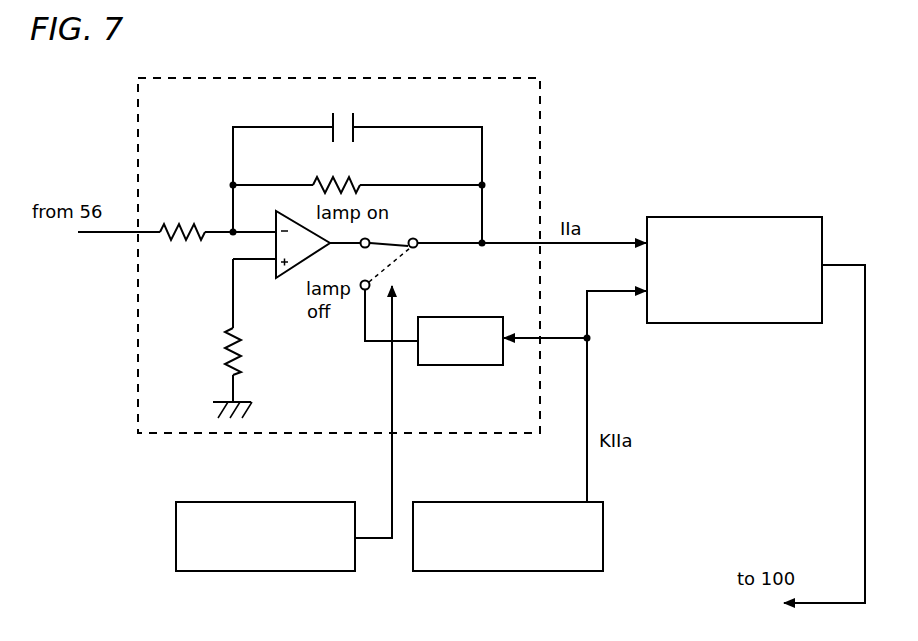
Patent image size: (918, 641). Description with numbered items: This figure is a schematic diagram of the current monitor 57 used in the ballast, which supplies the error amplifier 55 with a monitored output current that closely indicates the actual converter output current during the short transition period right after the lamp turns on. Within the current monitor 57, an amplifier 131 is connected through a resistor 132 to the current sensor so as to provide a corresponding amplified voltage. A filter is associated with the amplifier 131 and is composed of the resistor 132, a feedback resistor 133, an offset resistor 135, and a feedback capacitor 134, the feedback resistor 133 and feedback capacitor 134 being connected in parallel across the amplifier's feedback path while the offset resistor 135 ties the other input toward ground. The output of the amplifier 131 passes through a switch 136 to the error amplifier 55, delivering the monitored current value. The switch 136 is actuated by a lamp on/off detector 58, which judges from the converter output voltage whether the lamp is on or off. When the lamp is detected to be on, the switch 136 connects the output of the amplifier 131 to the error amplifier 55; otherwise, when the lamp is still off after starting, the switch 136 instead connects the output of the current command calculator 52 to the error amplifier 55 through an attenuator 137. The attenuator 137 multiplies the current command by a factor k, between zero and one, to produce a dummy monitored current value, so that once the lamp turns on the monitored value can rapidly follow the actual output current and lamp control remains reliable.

The current monitor 57 is at (533, 78).
The feedback capacitor 134 is at (343, 113).
The feedback resistor 133 is at (343, 176).
The resistor 132 is at (190, 244).
The amplifier 131 is at (283, 280).
The offset resistor 135 is at (199, 361).
The switch 136 is at (400, 274).
The attenuator 137 is at (482, 366).
The error amplifier 55 is at (734, 270).
The lamp on/off detector 58 is at (265, 536).
The current command calculator 52 is at (508, 536).